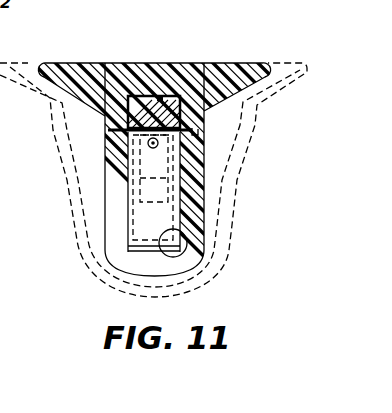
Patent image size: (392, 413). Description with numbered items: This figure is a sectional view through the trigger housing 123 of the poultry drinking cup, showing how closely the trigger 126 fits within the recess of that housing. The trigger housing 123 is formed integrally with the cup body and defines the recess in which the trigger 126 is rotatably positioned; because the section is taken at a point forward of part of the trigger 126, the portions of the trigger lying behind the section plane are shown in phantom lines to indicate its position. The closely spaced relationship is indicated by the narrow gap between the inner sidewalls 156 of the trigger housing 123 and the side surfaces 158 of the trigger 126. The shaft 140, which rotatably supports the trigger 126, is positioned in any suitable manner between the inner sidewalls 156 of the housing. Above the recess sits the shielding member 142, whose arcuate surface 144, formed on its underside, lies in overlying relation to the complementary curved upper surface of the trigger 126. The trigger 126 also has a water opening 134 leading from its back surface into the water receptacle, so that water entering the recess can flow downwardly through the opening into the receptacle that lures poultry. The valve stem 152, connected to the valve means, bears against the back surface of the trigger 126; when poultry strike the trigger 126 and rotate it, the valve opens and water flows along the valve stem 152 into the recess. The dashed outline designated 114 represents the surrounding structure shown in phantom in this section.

The mold housing 114 is at (76, 71).
The shielding member 142 is at (163, 63).
The arcuate surface 144 is at (189, 64).
The shaft 140 is at (198, 130).
The side surfaces 158 is at (176, 168).
The water opening 134 is at (176, 183).
The trigger housing 123 is at (208, 209).
The inner sidewalls 156 is at (182, 265).
The trigger 126 is at (142, 210).
The valve stem 152 is at (150, 145).